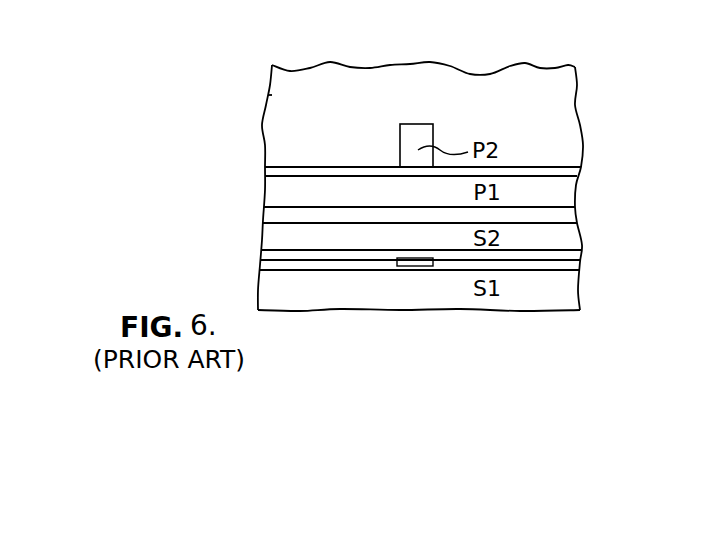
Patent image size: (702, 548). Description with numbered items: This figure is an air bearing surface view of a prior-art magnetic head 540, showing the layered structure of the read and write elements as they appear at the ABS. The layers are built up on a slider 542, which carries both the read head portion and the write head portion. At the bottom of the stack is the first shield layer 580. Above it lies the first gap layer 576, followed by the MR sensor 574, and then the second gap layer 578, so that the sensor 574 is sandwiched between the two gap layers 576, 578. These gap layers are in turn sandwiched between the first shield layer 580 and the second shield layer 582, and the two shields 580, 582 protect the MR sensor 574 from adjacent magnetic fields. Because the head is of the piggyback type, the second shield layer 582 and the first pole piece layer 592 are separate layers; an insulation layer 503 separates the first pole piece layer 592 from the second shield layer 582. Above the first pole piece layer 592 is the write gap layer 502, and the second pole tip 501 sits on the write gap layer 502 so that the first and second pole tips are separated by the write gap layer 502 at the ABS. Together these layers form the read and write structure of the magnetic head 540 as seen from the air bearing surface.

The magnetic head 540 is at (605, 78).
The slider 542 is at (275, 95).
The second pole tip 501 is at (413, 130).
The write gap layer 502 is at (333, 166).
The first pole piece layer 592 is at (273, 186).
The insulation layer 503 is at (570, 217).
The second shield layer 582 is at (270, 240).
The second gap layer 578 is at (537, 257).
The first gap layer 576 is at (322, 268).
The MR sensor 574 is at (413, 263).
The first shield layer 580 is at (568, 292).